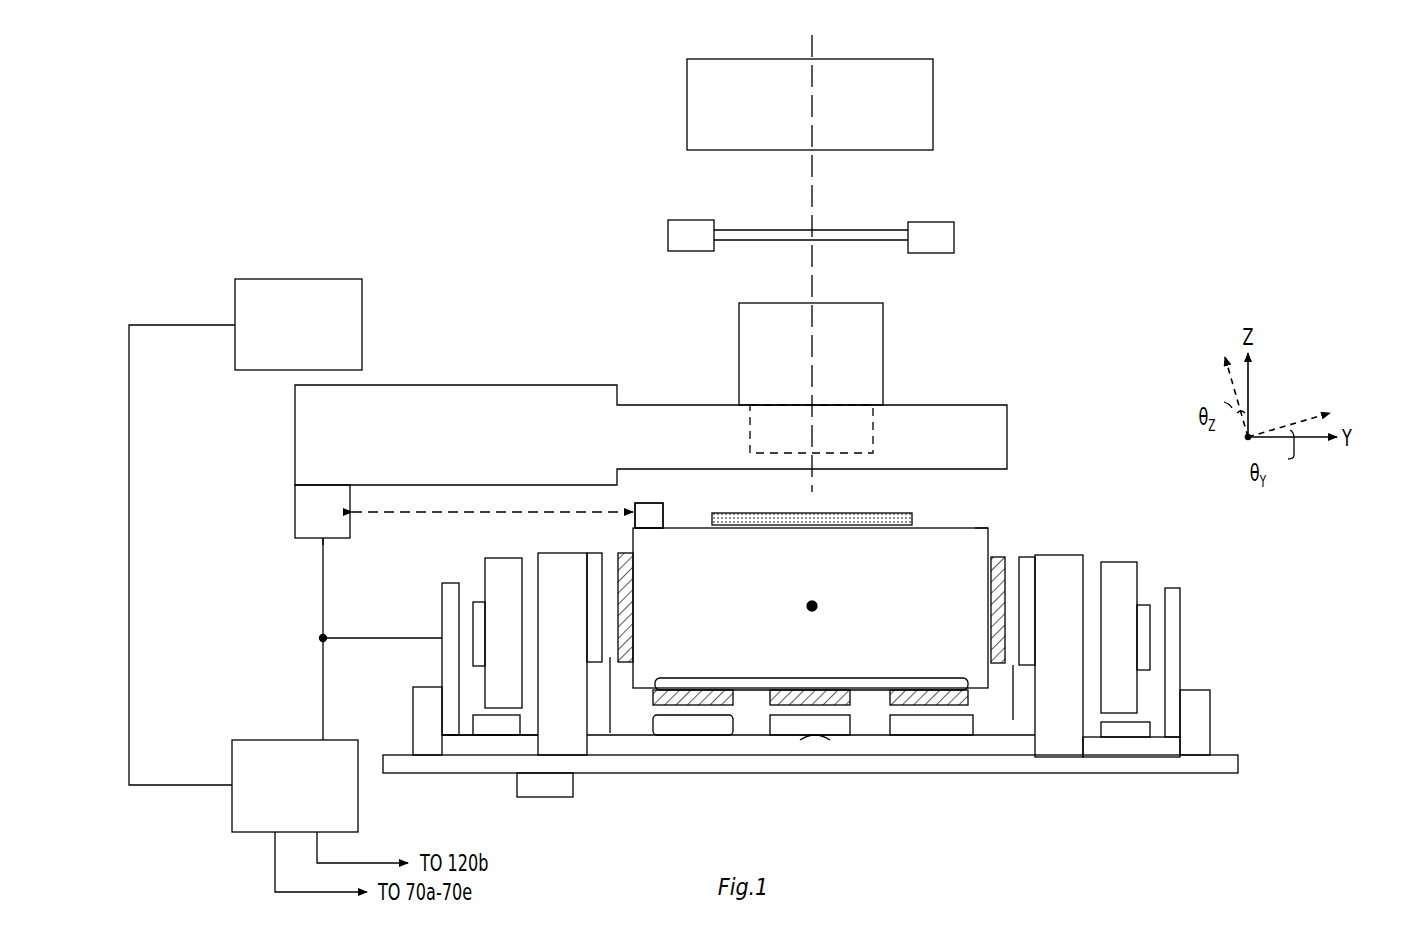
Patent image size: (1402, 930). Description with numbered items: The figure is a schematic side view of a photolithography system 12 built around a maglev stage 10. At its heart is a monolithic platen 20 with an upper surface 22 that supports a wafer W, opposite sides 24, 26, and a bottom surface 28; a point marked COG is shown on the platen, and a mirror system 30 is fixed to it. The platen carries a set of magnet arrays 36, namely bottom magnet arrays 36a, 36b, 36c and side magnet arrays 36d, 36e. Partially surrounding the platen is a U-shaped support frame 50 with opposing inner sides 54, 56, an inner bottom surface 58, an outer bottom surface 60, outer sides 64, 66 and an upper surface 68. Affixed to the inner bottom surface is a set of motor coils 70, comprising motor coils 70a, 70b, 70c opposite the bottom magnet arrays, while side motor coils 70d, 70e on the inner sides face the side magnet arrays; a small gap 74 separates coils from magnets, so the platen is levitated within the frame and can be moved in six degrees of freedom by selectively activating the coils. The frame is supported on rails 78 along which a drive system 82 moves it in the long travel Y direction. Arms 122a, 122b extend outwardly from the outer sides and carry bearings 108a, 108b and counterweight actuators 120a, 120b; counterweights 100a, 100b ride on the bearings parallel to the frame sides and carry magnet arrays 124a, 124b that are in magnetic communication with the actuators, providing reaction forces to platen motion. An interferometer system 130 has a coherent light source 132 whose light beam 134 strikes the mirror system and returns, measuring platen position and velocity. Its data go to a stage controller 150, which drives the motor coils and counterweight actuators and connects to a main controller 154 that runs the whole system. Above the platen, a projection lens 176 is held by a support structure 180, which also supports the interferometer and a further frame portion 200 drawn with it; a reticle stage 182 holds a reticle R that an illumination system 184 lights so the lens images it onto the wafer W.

The maglev stage 10 is at (1105, 456).
The photolithography system 12 is at (213, 77).
The platen 20 is at (810, 608).
The upper surface 22 is at (974, 528).
The side 24 is at (627, 733).
The side 26 is at (1012, 667).
The bottom surface 28 is at (745, 737).
The mirror system 30 is at (650, 503).
The set of magnet arrays 36 is at (803, 683).
The magnet array 36a is at (735, 702).
The magnet array 36b is at (850, 702).
The magnet array 36c is at (968, 702).
The side magnet array 36d is at (998, 557).
The side magnet array 36e is at (625, 553).
The U-shaped support frame 50 is at (757, 690).
The inner side 54 is at (600, 737).
The inner side 56 is at (1022, 668).
The inner bottom surface 58 is at (616, 737).
The outer bottom surface 60 is at (975, 728).
The outer side 64 is at (532, 733).
The outer side 66 is at (1085, 560).
The upper surface 68 is at (554, 553).
The set of motor coils 70 is at (830, 742).
The motor coil 70a is at (662, 730).
The motor coil 70b is at (766, 732).
The motor coil 70c is at (893, 718).
The side motor coil 70d is at (1030, 557).
The side motor coil 70e is at (592, 553).
The gap 74 is at (610, 660).
The rail 78 is at (1205, 770).
The drive system 82 is at (518, 786).
The counterweight 100a is at (502, 558).
The counterweight 100b is at (1120, 562).
The bearing 108a is at (483, 727).
The bearing 108b is at (1115, 740).
The counterweight actuator 120a is at (448, 583).
The counterweight actuator 120b is at (1175, 588).
The arm 122a is at (418, 687).
The arm 122b is at (1200, 690).
The magnet array 124a is at (475, 604).
The magnet array 124b is at (1143, 605).
The interferometer system 130 is at (290, 488).
The coherent light source 132 is at (300, 540).
The light beam 134 is at (529, 514).
The stage controller 150 is at (232, 826).
The main controller 154 is at (350, 279).
The projection lens 176 is at (872, 303).
The support structure 180 is at (995, 405).
The reticle stage 182 is at (940, 222).
The illumination system 184 is at (933, 104).
The frame 200 is at (592, 436).
The wafer W is at (905, 514).
The reticle R is at (858, 232).
The center of gravity COG is at (817, 604).